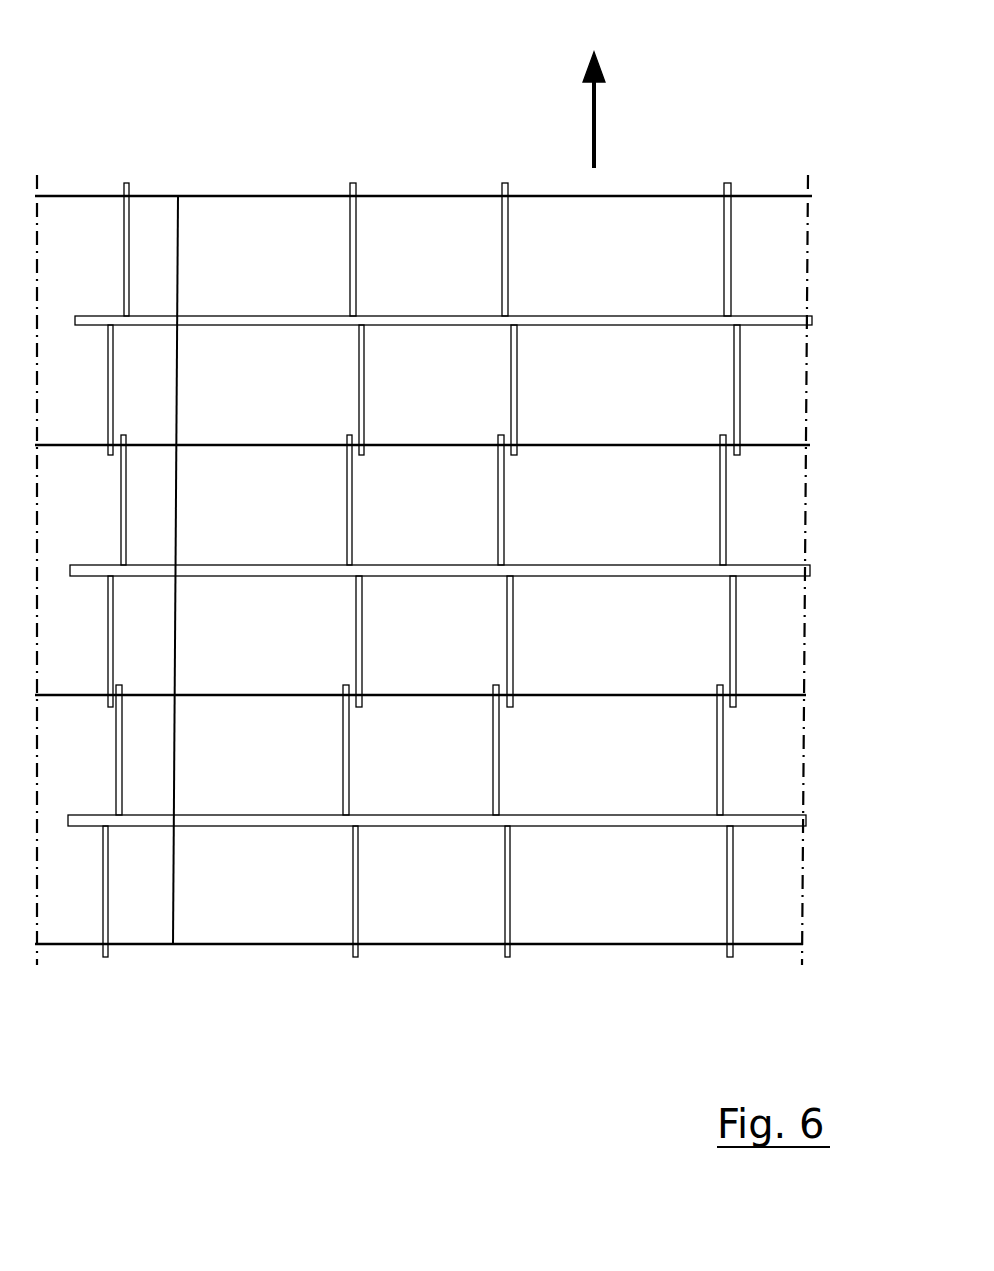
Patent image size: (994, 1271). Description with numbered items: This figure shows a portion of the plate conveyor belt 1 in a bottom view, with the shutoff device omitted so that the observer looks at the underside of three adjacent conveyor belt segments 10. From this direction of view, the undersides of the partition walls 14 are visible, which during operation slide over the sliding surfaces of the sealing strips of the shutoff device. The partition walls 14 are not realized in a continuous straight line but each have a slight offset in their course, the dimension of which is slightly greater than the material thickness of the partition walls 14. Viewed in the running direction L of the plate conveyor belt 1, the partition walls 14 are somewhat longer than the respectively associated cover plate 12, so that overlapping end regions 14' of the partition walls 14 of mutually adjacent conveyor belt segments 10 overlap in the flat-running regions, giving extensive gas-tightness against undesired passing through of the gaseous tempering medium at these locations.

The plate conveyor belt 1 is at (440, 138).
The running direction L is at (596, 122).
The conveyor belt segment 10 is at (822, 362).
The cover plate 12 is at (262, 250).
The partition walls 14 is at (485, 570).
The overlapping end regions 14' is at (335, 336).